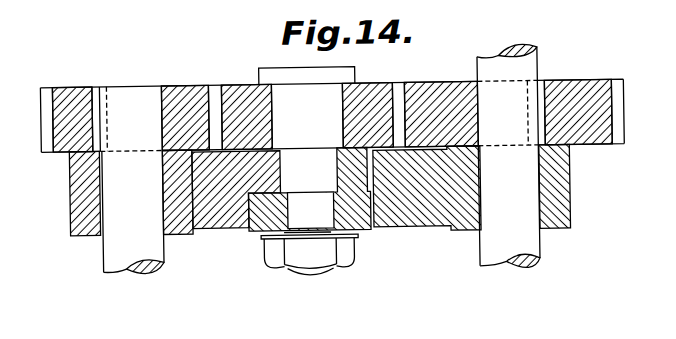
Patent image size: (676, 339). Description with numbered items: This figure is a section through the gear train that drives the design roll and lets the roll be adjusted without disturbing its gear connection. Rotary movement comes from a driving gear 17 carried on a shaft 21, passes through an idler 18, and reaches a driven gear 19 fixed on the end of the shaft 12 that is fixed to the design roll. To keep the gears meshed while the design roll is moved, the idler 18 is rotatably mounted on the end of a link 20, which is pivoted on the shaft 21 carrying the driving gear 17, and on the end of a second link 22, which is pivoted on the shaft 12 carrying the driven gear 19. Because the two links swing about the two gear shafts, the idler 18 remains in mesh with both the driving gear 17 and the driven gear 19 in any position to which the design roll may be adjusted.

The shaft 12 is at (482, 64).
The driving gear 17 is at (58, 149).
The idler 18 is at (230, 89).
The driven gear 19 is at (575, 88).
The link 20 is at (86, 225).
The shaft 21 is at (108, 268).
The link 22 is at (264, 221).